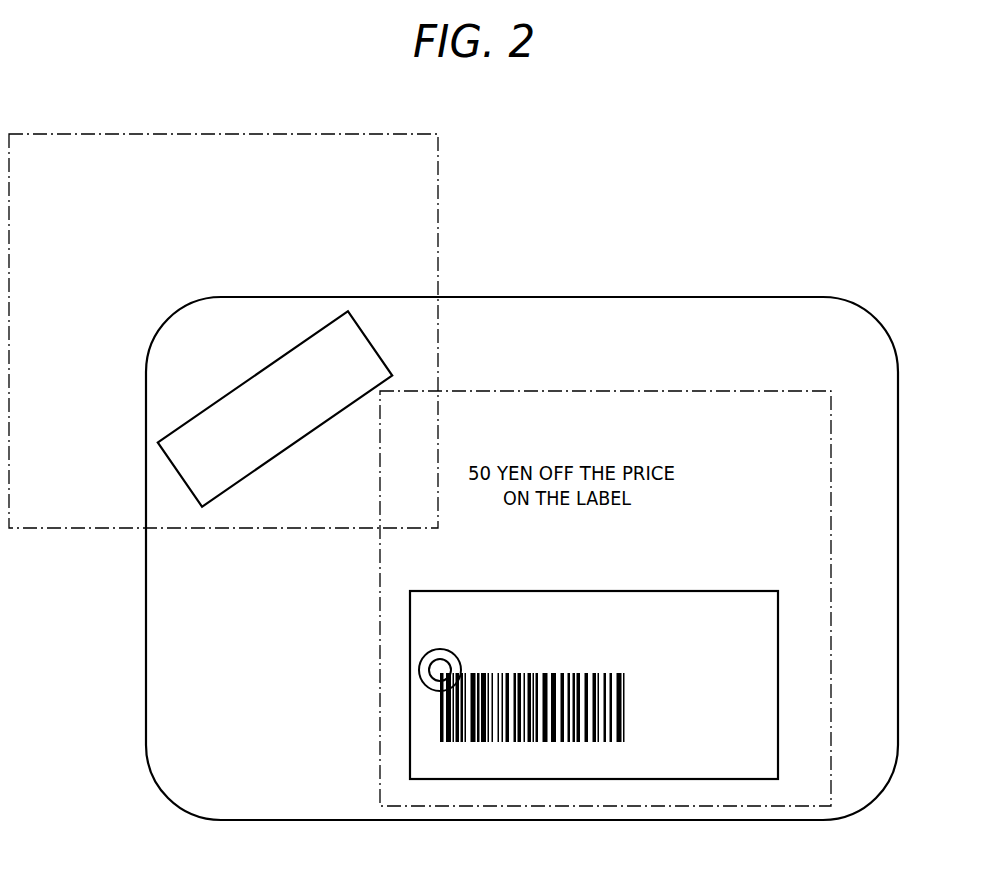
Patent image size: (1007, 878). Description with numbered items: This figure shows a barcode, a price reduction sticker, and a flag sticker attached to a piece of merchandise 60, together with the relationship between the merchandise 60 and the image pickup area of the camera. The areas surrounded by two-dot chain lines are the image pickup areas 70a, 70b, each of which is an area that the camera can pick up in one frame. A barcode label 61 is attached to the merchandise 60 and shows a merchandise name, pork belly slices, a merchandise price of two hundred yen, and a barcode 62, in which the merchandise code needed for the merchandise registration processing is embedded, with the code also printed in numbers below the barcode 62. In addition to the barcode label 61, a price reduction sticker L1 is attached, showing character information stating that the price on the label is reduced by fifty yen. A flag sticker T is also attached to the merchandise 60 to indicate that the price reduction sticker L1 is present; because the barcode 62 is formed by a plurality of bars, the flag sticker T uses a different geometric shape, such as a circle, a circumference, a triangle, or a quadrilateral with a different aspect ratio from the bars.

The merchandise 60 is at (810, 297).
The barcode label 61 is at (693, 573).
The barcode 62 is at (440, 702).
The flag sticker T is at (419, 668).
The price reduction sticker L1 is at (295, 442).
The image pickup area 70a is at (380, 762).
The image pickup area 70b is at (80, 528).